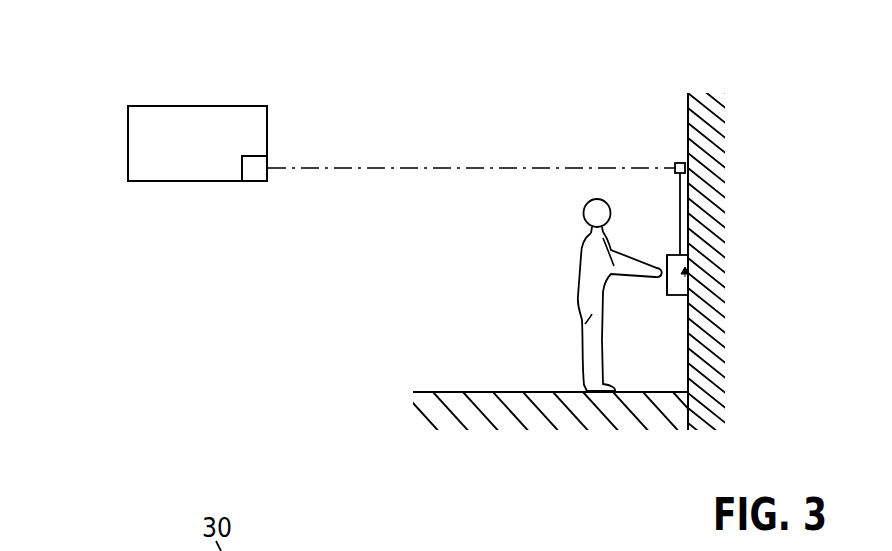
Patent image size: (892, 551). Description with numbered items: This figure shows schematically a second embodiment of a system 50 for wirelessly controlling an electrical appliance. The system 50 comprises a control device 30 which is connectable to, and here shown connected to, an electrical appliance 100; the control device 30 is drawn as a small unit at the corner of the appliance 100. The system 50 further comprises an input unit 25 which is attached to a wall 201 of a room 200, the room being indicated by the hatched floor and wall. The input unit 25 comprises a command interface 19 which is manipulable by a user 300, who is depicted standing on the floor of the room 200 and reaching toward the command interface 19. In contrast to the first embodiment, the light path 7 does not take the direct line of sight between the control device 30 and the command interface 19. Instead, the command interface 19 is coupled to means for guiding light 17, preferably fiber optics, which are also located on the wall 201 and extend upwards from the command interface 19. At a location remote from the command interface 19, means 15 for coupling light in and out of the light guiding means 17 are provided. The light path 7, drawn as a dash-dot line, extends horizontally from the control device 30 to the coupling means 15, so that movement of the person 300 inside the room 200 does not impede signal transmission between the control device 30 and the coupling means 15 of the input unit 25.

The system 50 is at (185, 100).
The electrical appliance 100 is at (153, 147).
The control device 30 is at (253, 170).
The light path 7 is at (470, 161).
The wall 201 is at (695, 104).
The room 200 is at (495, 330).
The user 300 is at (593, 312).
The means for coupling light 15 is at (678, 163).
The means for guiding light 17 is at (682, 188).
The command interface 19 is at (689, 268).
The input unit 25 is at (674, 301).